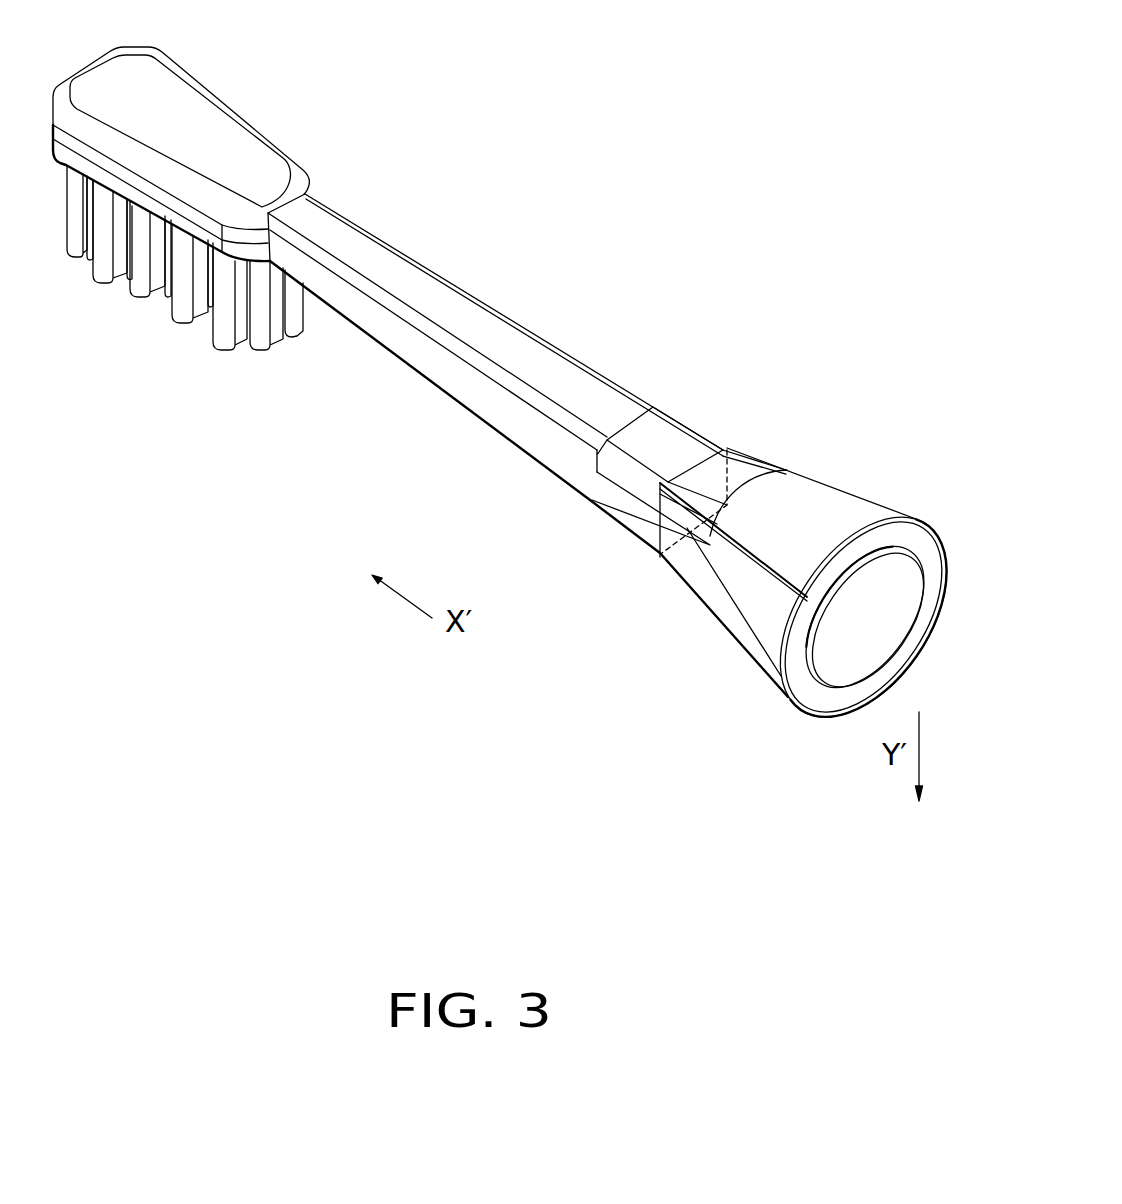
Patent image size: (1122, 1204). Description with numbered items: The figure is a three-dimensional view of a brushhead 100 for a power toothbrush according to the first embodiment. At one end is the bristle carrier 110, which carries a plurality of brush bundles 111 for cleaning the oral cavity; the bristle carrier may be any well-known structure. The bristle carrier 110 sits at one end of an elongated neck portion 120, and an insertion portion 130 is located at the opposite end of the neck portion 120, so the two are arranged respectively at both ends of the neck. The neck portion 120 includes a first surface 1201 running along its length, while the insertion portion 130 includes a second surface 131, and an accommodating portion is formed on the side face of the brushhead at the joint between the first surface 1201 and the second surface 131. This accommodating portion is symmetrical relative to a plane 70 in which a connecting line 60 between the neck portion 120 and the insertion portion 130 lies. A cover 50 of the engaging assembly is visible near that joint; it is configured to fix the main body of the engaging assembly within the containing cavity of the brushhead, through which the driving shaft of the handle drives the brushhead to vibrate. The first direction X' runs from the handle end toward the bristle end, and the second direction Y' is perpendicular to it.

The brush head assembly 100 is at (647, 77).
The bristle carrier 110 is at (222, 140).
The brush bundles 111 is at (158, 275).
The neck portion 120 is at (415, 278).
The first surface 1201 is at (568, 367).
The cover 50 is at (667, 438).
The connecting line 60 is at (660, 482).
The plane 70 is at (687, 530).
The insertion portion 130 is at (848, 510).
The second surface 131 is at (780, 470).